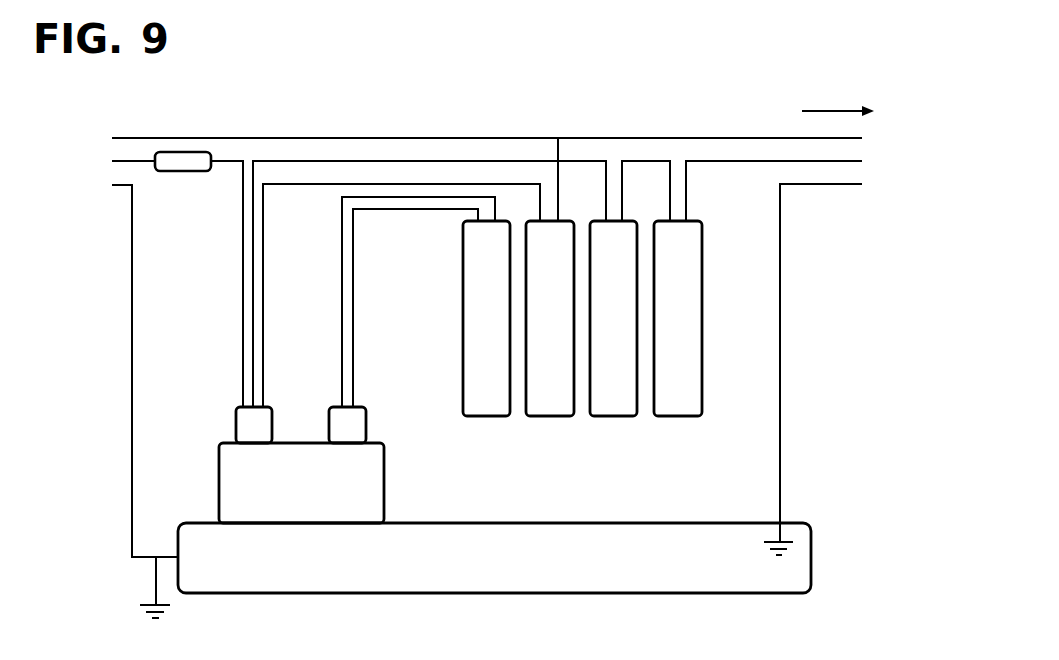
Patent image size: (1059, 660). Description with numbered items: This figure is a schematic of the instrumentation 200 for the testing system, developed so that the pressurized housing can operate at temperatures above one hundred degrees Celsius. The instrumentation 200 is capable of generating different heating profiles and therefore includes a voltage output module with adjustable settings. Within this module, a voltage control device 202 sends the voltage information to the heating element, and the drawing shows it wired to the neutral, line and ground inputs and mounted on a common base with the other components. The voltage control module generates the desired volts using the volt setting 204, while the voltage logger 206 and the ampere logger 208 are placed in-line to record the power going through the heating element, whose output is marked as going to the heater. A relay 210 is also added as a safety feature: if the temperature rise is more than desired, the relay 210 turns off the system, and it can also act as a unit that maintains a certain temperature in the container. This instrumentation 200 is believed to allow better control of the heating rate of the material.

The instrumentation 200 is at (781, 100).
The voltage control device 202 is at (319, 505).
The volt setting 204 is at (503, 340).
The voltage logger 206 is at (567, 340).
The ampere logger 208 is at (631, 340).
The relay 210 is at (695, 340).